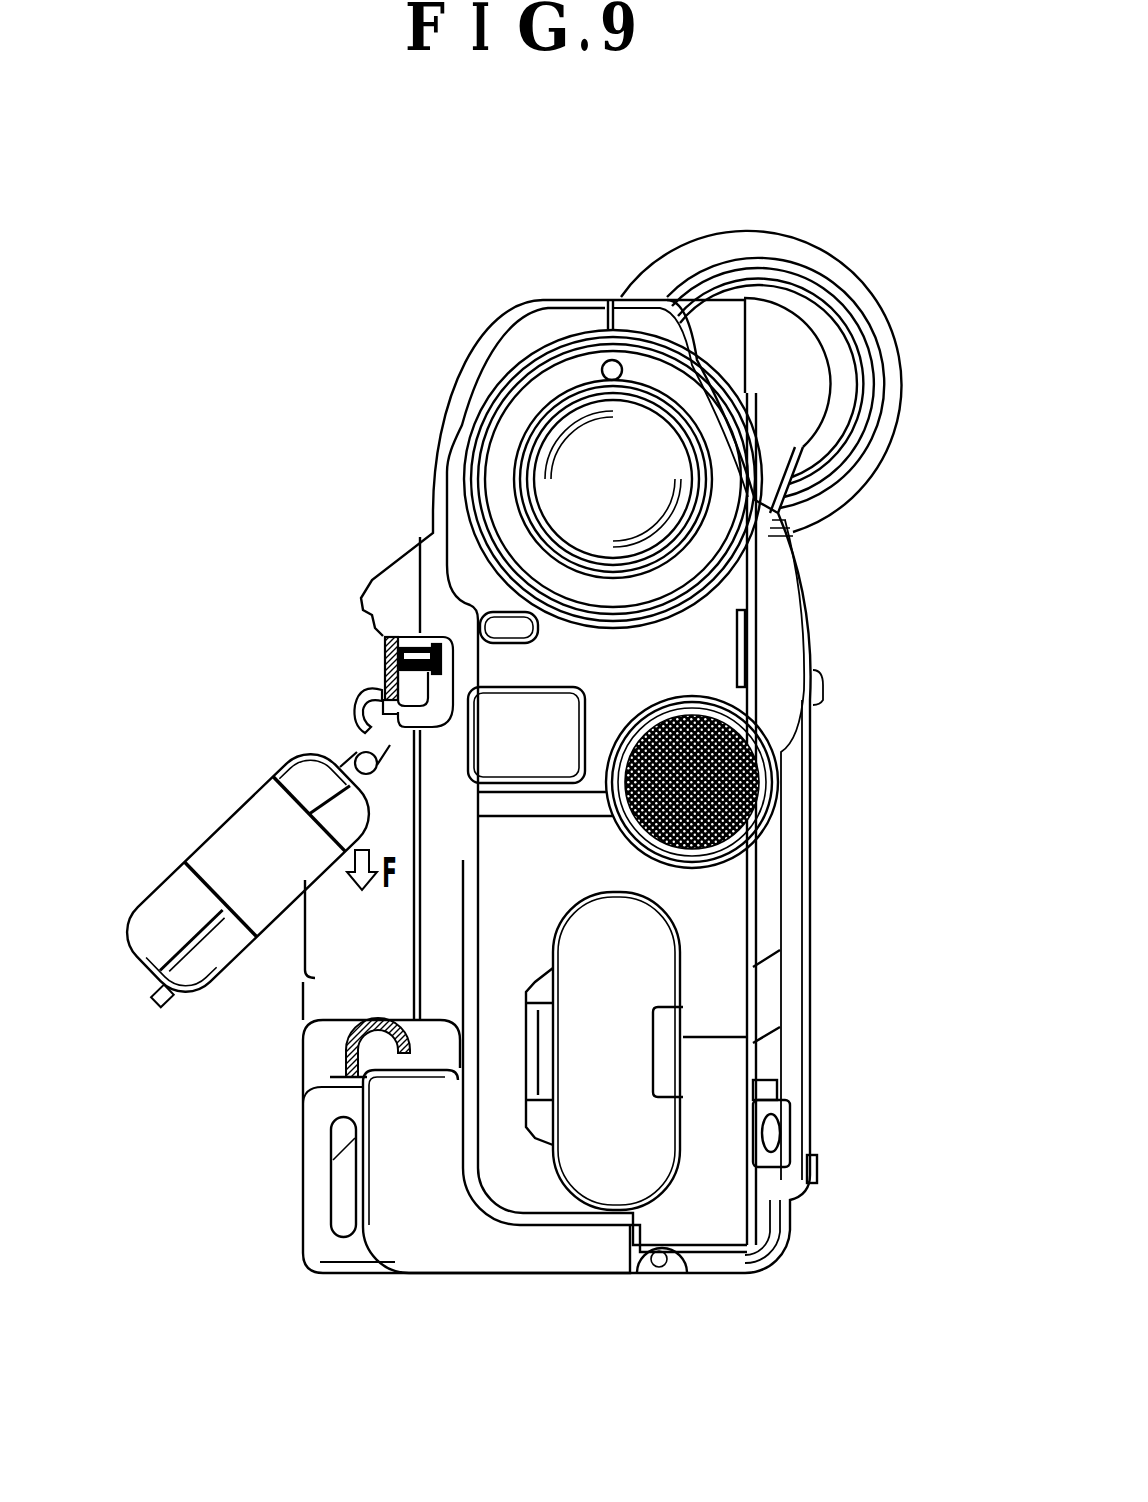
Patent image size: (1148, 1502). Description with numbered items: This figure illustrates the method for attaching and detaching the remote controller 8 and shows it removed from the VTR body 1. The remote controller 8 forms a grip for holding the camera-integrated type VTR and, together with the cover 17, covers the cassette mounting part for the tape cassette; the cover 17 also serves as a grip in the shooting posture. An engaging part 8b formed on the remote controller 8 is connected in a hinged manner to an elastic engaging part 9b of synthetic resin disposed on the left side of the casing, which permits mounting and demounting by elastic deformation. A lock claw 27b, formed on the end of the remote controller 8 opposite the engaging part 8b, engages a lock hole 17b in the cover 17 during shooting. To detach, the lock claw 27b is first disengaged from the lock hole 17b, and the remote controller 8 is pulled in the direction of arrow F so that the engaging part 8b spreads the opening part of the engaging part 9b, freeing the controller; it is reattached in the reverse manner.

The VTR body 1 is at (390, 585).
The engaging part 9b is at (378, 690).
The engaging part 8b is at (357, 742).
The remote controller 8 is at (167, 905).
The lock claw 27b is at (160, 1000).
The lock hole 17b is at (387, 1020).
The cover 17 is at (443, 1242).